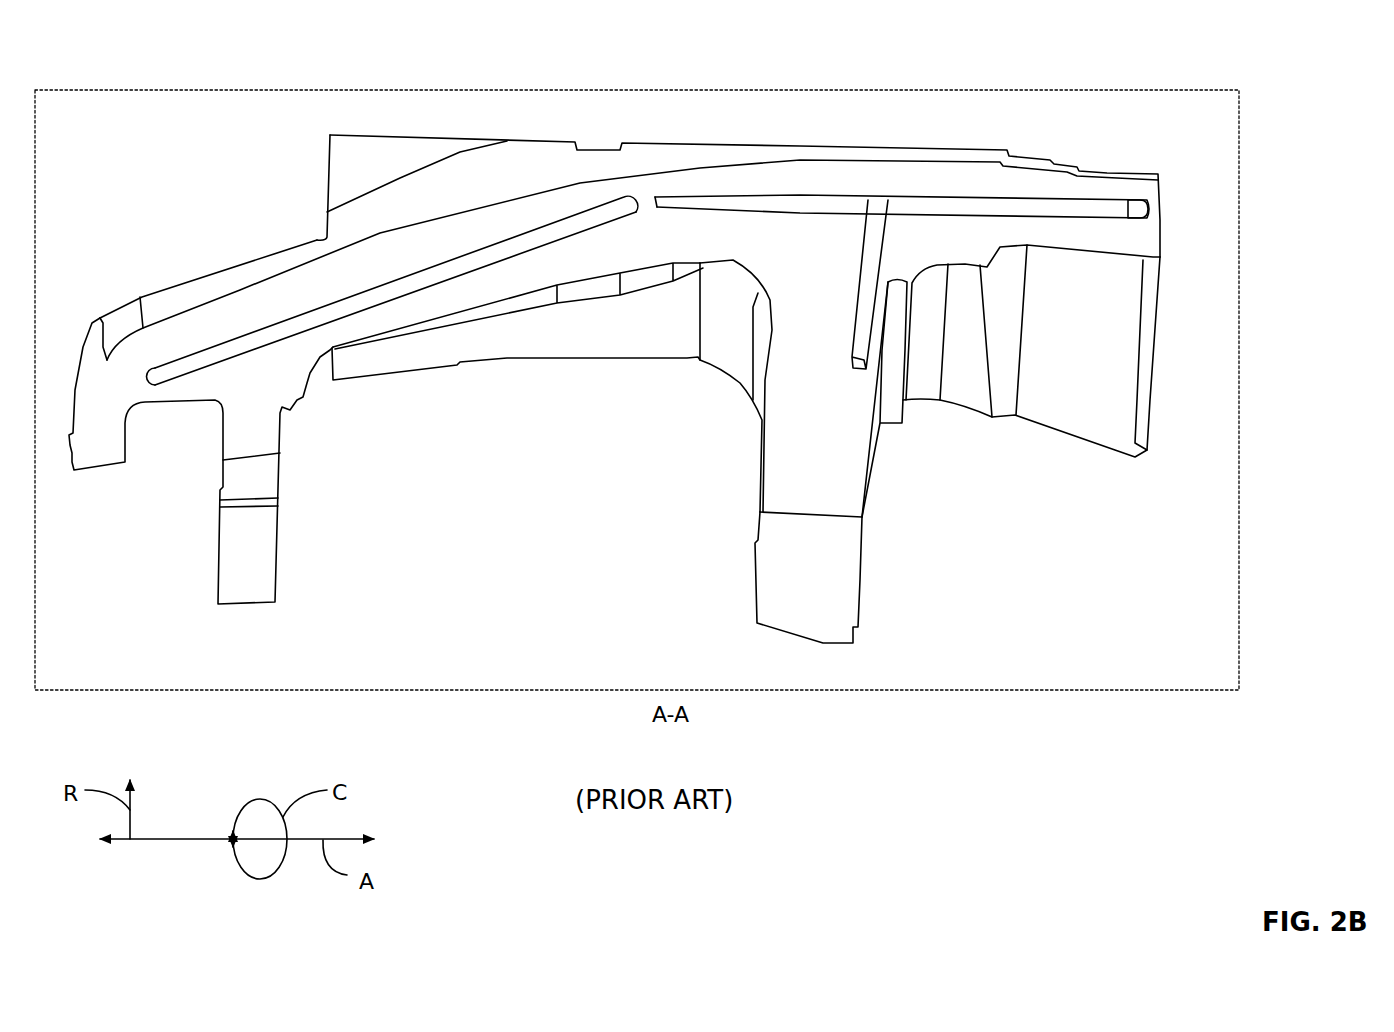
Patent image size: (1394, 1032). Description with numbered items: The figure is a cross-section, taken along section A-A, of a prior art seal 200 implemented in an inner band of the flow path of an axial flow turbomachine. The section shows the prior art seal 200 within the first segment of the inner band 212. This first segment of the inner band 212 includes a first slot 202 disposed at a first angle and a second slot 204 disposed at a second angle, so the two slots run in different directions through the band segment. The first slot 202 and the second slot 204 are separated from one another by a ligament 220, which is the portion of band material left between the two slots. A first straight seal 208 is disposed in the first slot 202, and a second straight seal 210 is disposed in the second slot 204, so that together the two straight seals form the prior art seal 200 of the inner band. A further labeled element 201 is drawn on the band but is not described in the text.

The prior art seal 200 is at (1166, 47).
The flange 201 is at (933, 147).
The first slot 202 is at (383, 298).
The second slot 204 is at (1120, 205).
The first straight seal 208 is at (447, 258).
The second straight seal 210 is at (807, 197).
The first segment of the inner band 212 is at (307, 238).
The ligament 220 is at (645, 198).